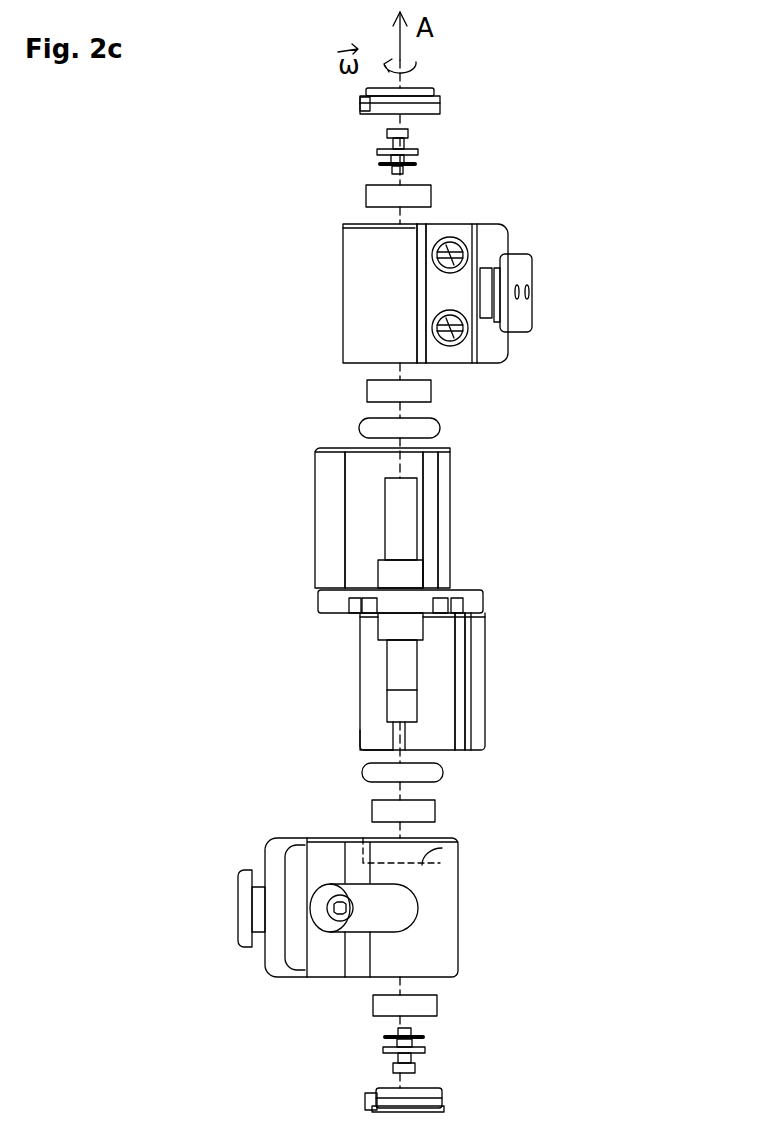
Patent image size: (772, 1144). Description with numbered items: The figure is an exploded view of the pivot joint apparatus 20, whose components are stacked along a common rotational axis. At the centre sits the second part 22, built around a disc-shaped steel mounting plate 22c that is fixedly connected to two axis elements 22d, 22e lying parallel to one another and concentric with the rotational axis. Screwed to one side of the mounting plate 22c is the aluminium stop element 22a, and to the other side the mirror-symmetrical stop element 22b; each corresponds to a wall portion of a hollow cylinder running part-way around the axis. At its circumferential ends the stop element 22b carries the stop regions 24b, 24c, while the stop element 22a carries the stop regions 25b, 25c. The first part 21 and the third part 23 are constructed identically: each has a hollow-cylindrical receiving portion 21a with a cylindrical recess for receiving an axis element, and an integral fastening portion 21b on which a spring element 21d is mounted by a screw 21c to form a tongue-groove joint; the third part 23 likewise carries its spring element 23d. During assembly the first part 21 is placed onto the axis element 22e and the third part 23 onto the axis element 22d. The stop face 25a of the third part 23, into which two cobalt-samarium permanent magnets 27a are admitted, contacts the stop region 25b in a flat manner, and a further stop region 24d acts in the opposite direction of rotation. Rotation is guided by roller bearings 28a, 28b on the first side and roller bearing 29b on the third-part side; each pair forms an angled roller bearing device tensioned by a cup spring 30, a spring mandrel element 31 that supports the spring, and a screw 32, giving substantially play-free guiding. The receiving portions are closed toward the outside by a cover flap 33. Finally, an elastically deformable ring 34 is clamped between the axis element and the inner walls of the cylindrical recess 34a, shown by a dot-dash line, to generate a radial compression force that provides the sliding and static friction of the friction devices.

The pivot joint apparatus 20 is at (637, 76).
The first part 21 is at (342, 952).
The receiving portion 21a is at (442, 975).
The fastening portion 21b is at (320, 968).
The screw 21c is at (307, 913).
The spring element 21d is at (237, 908).
The second part 22 is at (399, 604).
The stop element 22a is at (368, 501).
The stop element 22b is at (425, 703).
The mounting plate 22c is at (318, 599).
The axis element 22d is at (385, 545).
The axis element 22e is at (400, 655).
The third part 23 is at (474, 253).
The spring element 23d is at (532, 263).
The stop region 24b is at (372, 740).
The stop region 24c is at (460, 738).
The stop region 24d is at (356, 968).
The stop region 25a is at (443, 225).
The stop region 25b is at (316, 466).
The stop region 25c is at (430, 468).
The permanent magnets 27a is at (455, 240).
The roller bearing 28a is at (437, 811).
The roller bearing 28b is at (437, 1005).
The roller bearing 29b is at (366, 200).
The cup spring 30 is at (380, 165).
The spring mandrel element 31 is at (377, 152).
The screw 32 is at (386, 133).
The cover flap 33 is at (436, 88).
The elastically deformable ring 34 is at (441, 428).
The cylindrical recess 34a is at (450, 848).